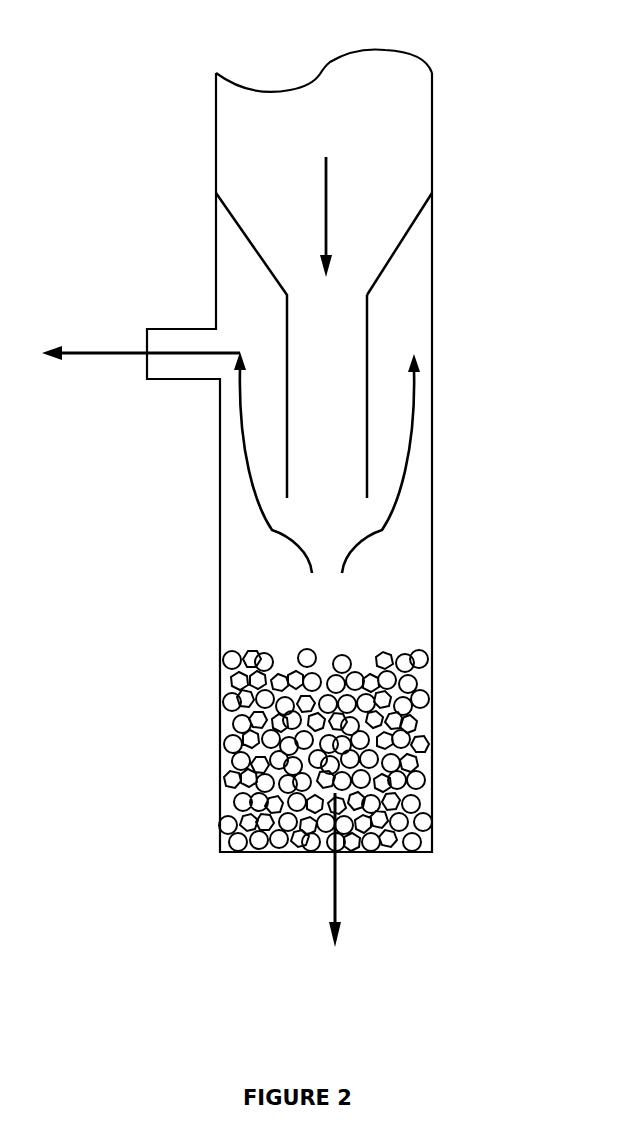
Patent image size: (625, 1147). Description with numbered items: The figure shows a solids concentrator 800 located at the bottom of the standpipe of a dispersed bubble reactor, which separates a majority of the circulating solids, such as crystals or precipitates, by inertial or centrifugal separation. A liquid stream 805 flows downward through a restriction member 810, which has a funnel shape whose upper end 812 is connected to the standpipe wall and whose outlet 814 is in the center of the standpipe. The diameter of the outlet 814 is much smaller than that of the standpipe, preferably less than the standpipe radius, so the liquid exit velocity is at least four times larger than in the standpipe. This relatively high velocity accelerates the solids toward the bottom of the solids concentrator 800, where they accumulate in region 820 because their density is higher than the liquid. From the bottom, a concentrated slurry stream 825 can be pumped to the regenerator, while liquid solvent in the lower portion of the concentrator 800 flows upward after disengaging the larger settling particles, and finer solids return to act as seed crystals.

The solids concentrator 800 is at (432, 155).
The liquid stream 805 is at (342, 210).
The restriction member 810 is at (405, 240).
The upper end 812 is at (217, 193).
The outlet 814 is at (367, 498).
The region 820 is at (238, 720).
The concentrated slurry stream 825 is at (357, 870).